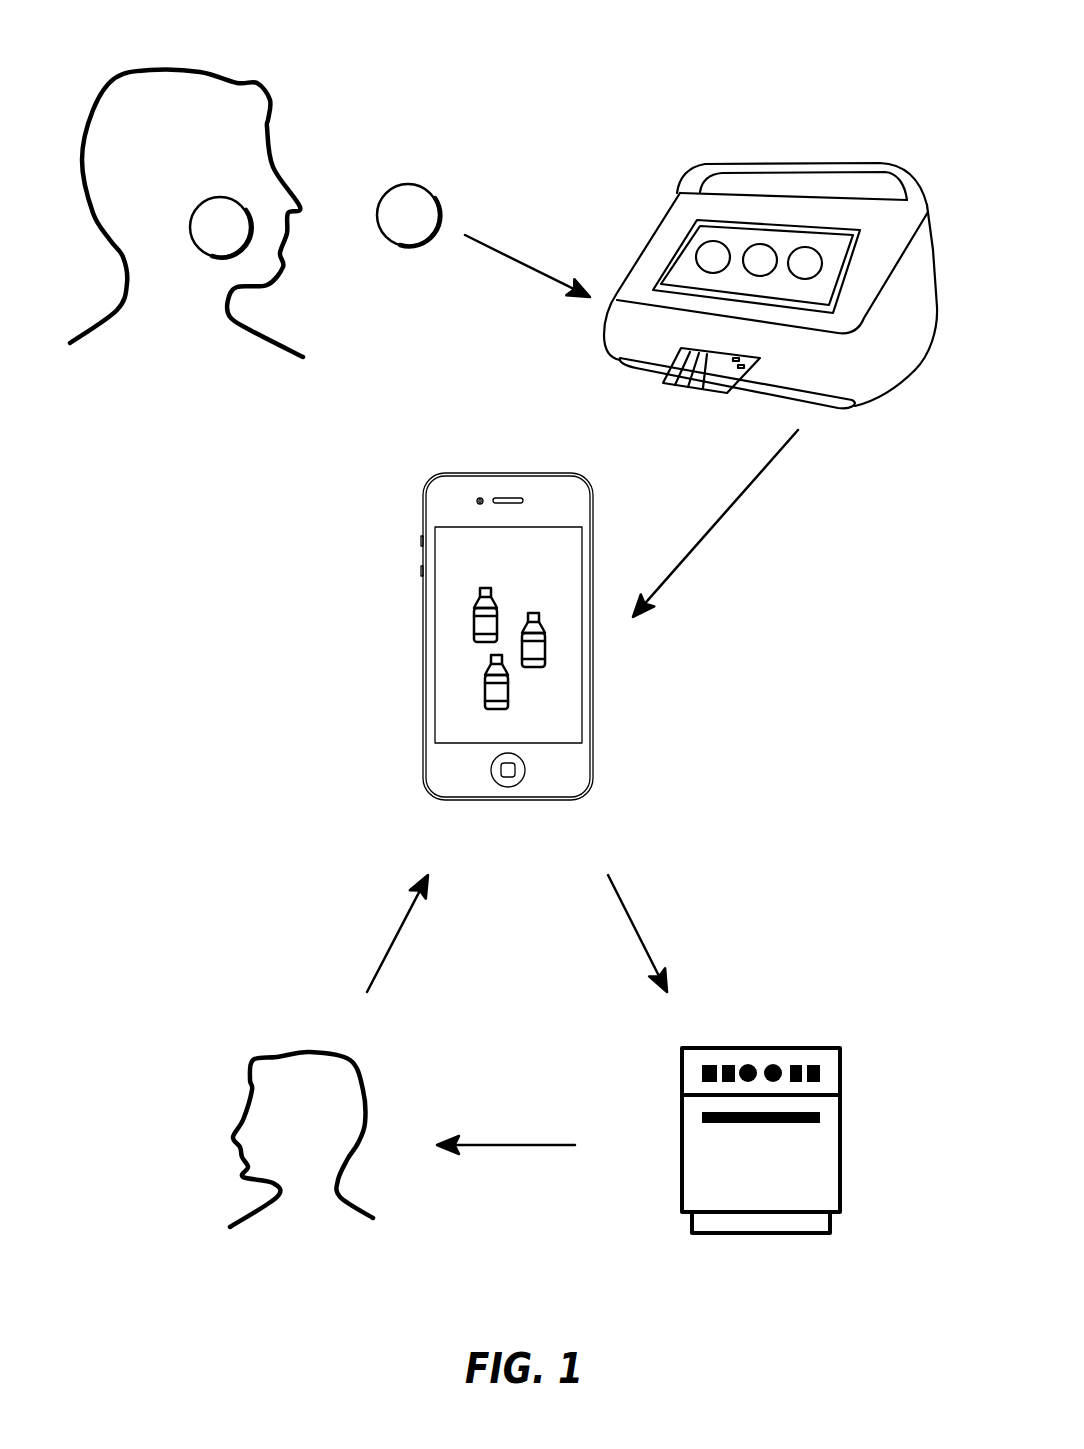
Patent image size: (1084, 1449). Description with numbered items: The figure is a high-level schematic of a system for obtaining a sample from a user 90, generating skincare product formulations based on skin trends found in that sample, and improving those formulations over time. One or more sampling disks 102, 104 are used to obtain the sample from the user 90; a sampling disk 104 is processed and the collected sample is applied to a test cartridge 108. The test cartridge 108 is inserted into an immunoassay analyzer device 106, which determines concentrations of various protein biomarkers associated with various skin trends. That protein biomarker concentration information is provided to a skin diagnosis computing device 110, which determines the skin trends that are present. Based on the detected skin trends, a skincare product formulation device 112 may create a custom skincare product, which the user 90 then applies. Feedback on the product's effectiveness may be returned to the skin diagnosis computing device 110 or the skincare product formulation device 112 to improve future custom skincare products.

The user 90 is at (115, 78).
The sampling disk 102 is at (203, 198).
The sampling disk 104 is at (386, 190).
The immunoassay analyzer device 106 is at (682, 190).
The test cartridge 108 is at (708, 395).
The skin diagnosis computing device 110 is at (425, 782).
The skincare product formulation device 112 is at (682, 1207).